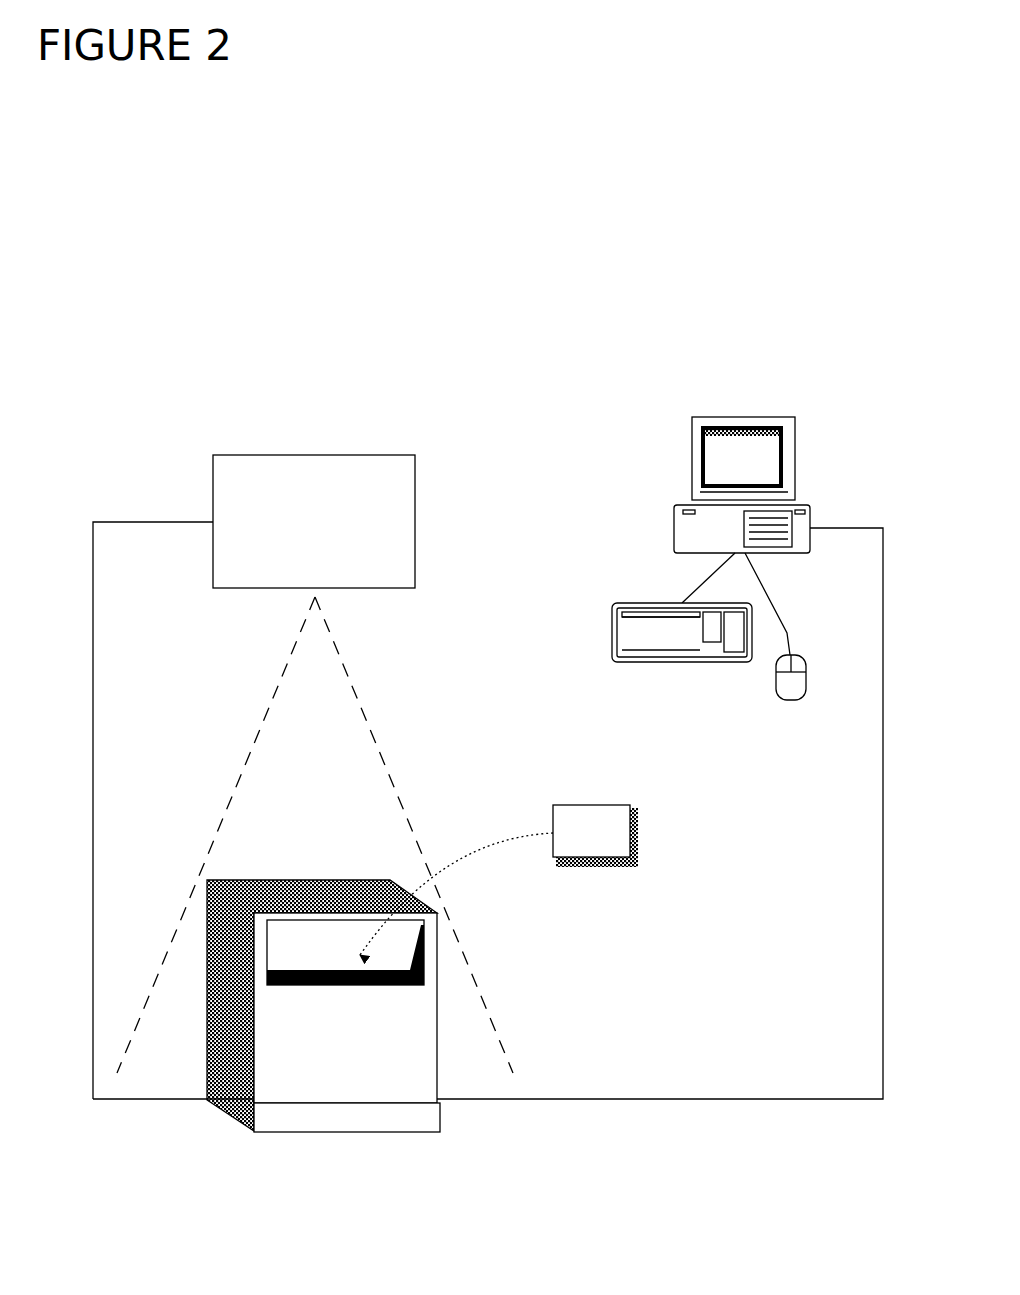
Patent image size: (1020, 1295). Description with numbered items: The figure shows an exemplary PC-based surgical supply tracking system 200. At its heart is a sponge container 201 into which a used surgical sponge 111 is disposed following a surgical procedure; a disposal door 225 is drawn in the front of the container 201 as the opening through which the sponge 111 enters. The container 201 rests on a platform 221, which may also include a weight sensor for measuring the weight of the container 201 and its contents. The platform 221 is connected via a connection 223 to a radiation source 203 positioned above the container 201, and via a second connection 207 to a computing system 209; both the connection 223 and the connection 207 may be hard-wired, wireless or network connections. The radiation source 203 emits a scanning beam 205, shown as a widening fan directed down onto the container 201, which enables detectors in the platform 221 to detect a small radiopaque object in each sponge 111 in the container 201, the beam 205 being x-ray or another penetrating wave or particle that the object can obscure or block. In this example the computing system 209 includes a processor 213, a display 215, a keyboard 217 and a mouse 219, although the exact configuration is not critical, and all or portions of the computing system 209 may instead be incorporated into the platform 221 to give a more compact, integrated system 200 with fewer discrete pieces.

The surgical supply tracking system 200 is at (482, 282).
The sponge container 201 is at (280, 976).
The radiation source 203 is at (298, 562).
The scanning beam 205 is at (298, 850).
The connection 207 is at (488, 850).
The computing system 209 is at (666, 536).
The surgical sponge 111 is at (526, 880).
The processor 213 is at (717, 523).
The display 215 is at (743, 460).
The keyboard 217 is at (610, 636).
The mouse 219 is at (790, 659).
The platform 221 is at (380, 1120).
The connection 223 is at (132, 777).
The disposal door 225 is at (272, 863).